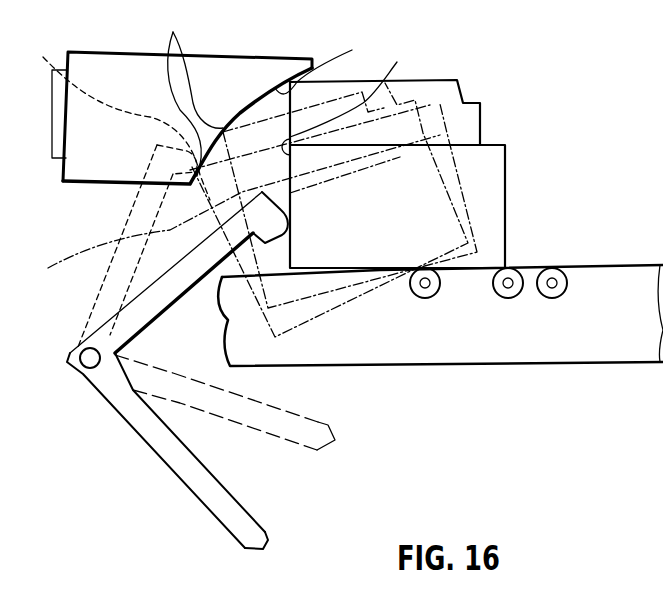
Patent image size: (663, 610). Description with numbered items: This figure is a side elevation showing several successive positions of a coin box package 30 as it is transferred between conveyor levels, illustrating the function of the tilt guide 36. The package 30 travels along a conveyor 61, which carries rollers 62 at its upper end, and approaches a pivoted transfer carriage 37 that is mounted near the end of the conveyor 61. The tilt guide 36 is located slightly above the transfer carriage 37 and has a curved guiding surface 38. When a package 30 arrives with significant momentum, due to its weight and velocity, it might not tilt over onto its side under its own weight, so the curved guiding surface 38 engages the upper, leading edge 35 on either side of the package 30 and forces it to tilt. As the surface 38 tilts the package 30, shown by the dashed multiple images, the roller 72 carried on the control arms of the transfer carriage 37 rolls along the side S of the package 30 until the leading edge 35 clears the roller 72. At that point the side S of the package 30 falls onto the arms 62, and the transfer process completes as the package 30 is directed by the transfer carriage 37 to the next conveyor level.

The coin box package 30 is at (457, 80).
The leading edge 35 is at (176, 29).
The tilt guide 36 is at (235, 75).
The transfer carriage 37 is at (92, 372).
The curved guiding surface 38 is at (331, 62).
The conveyor 61 is at (603, 272).
The roller 62 is at (550, 268).
The roller 72 is at (340, 220).
The side S is at (234, 163).